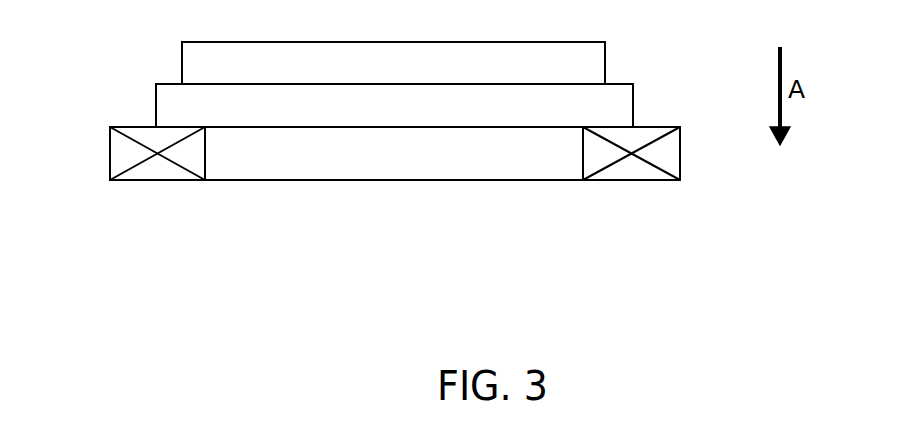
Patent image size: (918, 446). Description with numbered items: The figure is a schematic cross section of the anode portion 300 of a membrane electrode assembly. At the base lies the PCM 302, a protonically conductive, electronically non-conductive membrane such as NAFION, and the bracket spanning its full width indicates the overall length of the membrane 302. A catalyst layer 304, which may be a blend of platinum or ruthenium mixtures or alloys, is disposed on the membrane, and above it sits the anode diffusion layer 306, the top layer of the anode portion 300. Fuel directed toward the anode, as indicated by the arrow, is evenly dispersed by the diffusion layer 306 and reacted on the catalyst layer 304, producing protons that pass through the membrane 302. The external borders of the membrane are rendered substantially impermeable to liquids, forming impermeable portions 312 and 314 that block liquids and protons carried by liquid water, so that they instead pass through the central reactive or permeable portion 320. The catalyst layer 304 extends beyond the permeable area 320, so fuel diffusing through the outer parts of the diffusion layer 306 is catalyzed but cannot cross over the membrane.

The anode portion 300 is at (753, 237).
The PCM 302 is at (110, 250).
The catalyst layer 304 is at (615, 98).
The anode diffusion layer 306 is at (548, 41).
The impermeable portion 312 is at (652, 147).
The impermeable portion 314 is at (121, 152).
The reactive portion 320 is at (210, 204).